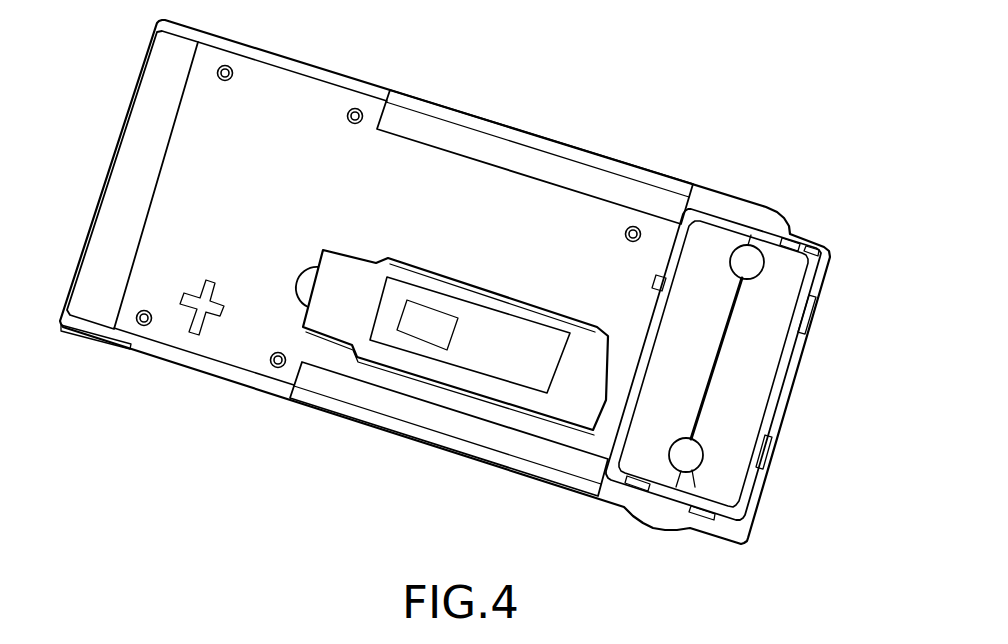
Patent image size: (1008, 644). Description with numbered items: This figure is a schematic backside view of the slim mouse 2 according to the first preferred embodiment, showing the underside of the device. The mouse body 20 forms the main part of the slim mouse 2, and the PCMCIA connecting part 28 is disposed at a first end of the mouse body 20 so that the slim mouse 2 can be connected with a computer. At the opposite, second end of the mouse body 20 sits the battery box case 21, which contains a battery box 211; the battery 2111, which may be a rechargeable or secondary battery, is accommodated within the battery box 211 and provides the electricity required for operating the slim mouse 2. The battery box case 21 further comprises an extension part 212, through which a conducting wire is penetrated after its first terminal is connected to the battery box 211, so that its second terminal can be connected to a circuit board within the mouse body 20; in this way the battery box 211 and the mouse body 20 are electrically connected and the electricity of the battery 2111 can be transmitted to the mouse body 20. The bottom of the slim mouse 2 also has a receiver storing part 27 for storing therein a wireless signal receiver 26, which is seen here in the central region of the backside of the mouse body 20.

The slim mouse 2 is at (665, 40).
The mouse body 20 is at (290, 92).
The battery box case 21 is at (817, 287).
The battery box 211 is at (673, 487).
The battery 2111 is at (752, 400).
The extension part 212 is at (622, 177).
The wireless signal receiver 26 is at (480, 358).
The receiver storing part 27 is at (297, 283).
The PCMCIA connecting part 28 is at (128, 168).